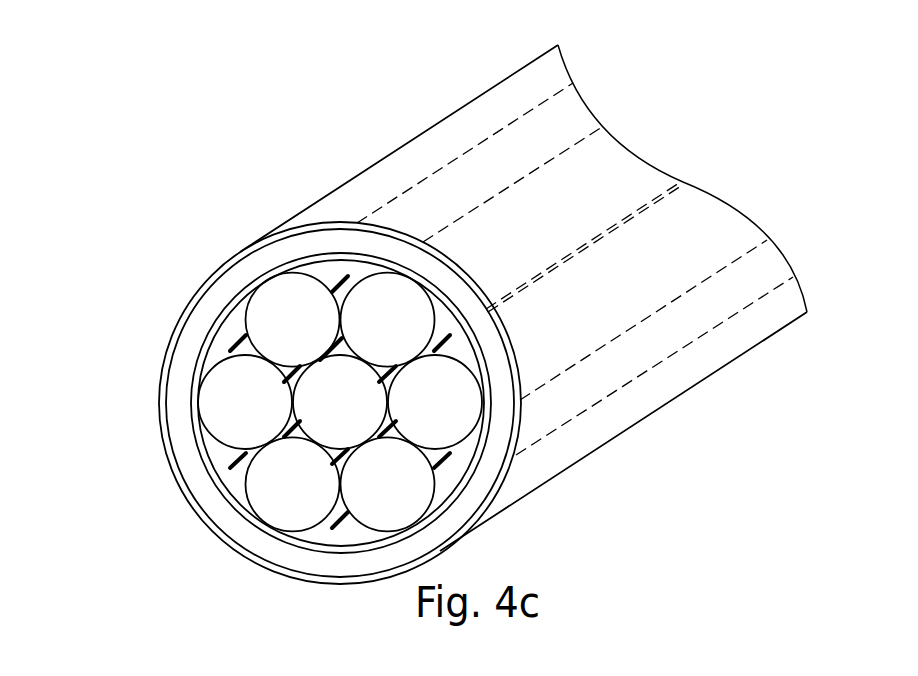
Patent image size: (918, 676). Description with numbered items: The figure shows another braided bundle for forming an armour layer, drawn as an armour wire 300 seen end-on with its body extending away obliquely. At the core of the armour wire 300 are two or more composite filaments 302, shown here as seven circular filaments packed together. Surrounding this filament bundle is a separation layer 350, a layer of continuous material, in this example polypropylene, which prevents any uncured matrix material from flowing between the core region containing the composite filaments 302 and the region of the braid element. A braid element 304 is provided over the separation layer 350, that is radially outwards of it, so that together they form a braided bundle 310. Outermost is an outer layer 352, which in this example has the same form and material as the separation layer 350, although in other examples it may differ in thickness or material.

The armour wire 300 is at (451, 314).
The braided bundle 310 is at (378, 91).
The outer layer 352 is at (206, 294).
The braid element 304 is at (445, 522).
The separation layer 350 is at (198, 357).
The composite filaments 302 is at (277, 307).